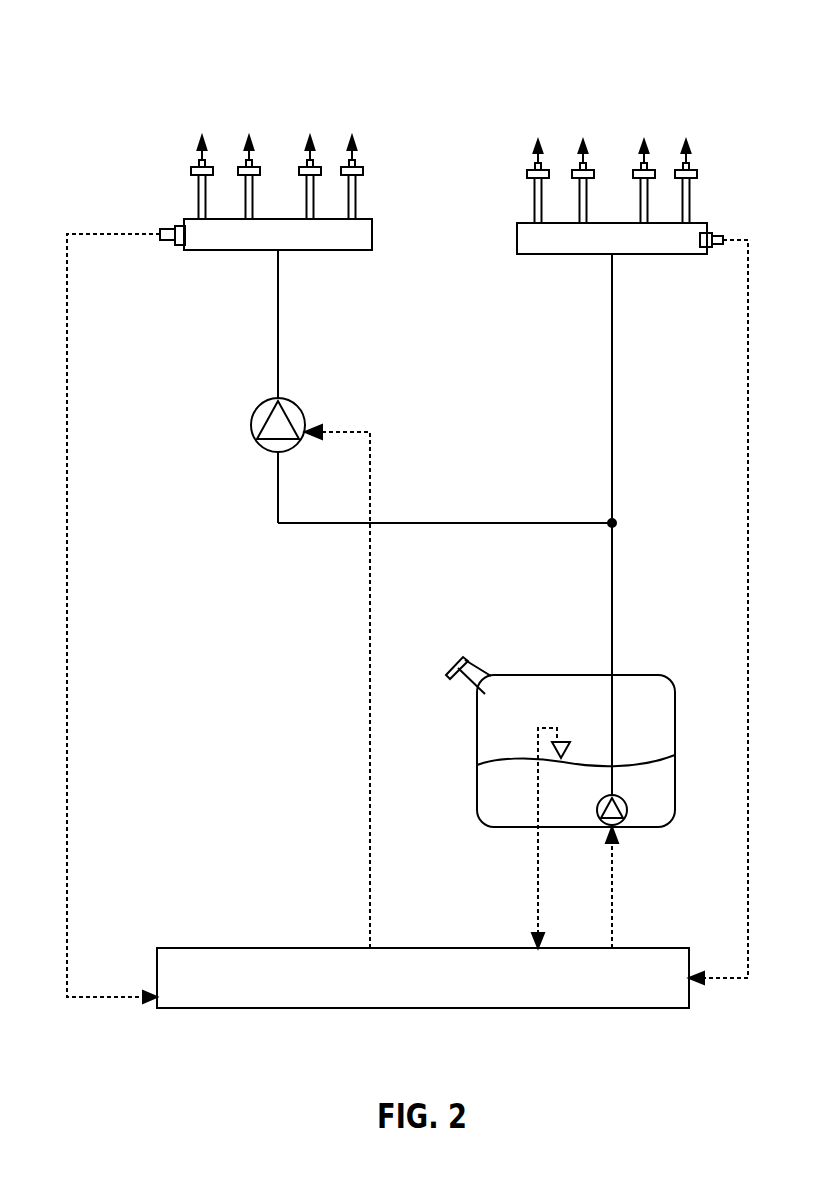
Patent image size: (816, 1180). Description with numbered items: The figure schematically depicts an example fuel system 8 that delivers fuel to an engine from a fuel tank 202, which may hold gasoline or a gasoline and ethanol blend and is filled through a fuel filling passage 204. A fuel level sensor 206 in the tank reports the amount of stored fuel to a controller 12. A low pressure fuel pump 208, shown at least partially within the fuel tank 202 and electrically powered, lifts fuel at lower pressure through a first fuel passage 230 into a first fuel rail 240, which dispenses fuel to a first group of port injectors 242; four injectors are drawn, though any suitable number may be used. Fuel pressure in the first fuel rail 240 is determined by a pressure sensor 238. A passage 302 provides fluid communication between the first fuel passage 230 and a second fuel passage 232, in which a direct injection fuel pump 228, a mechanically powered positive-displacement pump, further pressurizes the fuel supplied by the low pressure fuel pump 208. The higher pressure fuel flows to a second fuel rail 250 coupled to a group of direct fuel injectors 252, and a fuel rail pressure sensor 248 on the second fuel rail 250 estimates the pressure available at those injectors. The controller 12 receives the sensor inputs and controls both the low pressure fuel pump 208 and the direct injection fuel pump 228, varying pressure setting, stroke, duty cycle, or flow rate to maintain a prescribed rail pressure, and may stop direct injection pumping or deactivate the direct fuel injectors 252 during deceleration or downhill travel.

The fuel system 8 is at (674, 44).
The controller 12 is at (423, 978).
The fuel tank 202 is at (659, 675).
The fuel filling passage 204 is at (472, 662).
The fuel level sensor 206 is at (561, 740).
The low pressure fuel pump 208 is at (622, 798).
The direct injection fuel pump 228 is at (290, 400).
The first fuel passage 230 is at (613, 421).
The second fuel passage 232 is at (279, 313).
The pressure sensor 238 is at (712, 233).
The first fuel rail 240 is at (643, 255).
The first group of port injectors 242 is at (634, 172).
The fuel rail pressure sensor 248 is at (175, 228).
The second fuel rail 250 is at (362, 219).
The direct fuel injectors 252 is at (298, 170).
The passage 302 is at (467, 523).